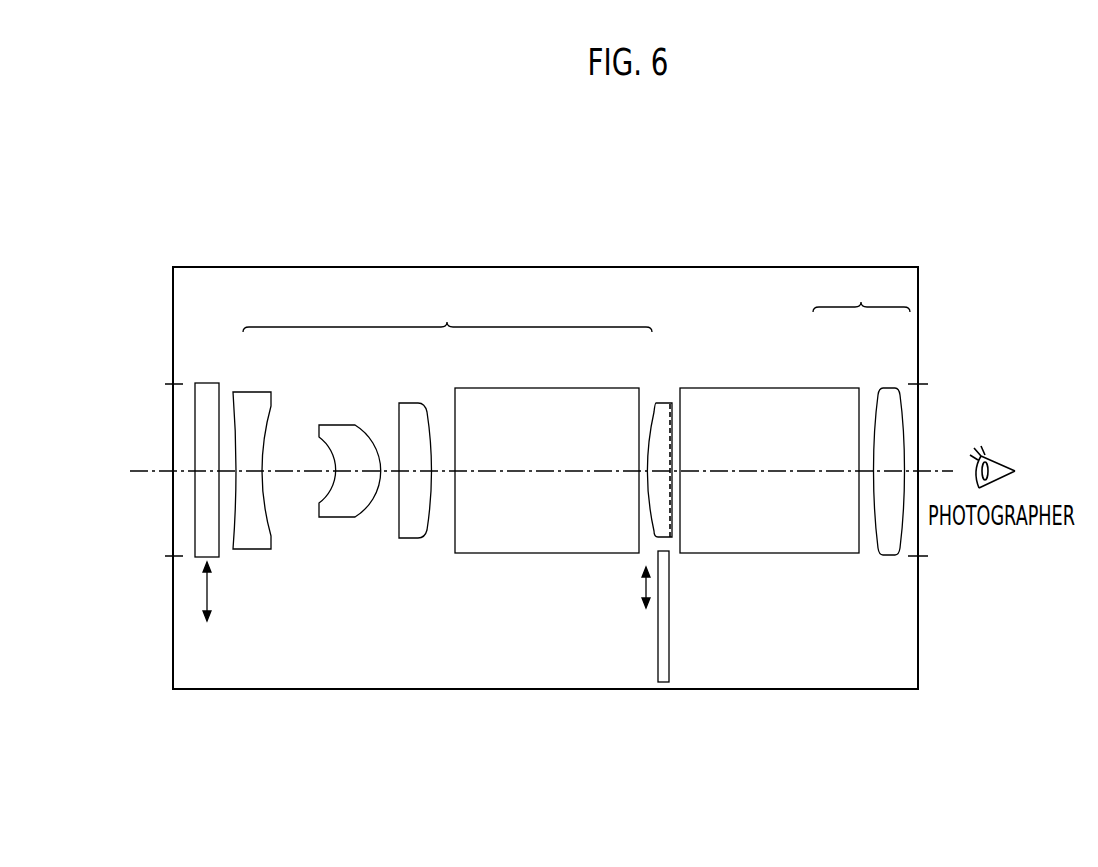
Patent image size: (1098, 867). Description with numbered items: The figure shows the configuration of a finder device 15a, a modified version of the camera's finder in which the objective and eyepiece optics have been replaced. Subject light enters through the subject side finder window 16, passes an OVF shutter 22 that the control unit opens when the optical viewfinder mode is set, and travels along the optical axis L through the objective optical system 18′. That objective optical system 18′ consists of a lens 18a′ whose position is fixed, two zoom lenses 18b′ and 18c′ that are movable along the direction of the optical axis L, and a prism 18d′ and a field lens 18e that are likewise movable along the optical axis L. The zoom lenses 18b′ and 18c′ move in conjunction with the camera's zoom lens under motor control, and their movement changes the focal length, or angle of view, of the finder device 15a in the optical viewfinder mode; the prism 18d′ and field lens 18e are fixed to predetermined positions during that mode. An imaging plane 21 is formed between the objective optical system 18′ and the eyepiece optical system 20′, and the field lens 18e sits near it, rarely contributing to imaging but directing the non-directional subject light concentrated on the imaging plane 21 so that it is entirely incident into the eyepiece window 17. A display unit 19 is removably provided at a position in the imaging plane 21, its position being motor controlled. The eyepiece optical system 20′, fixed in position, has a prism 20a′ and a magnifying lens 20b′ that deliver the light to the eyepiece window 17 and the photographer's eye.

The finder device 15a is at (675, 267).
The subject side finder window 16 is at (173, 546).
The eyepiece window 17 is at (918, 392).
The objective optical system 18′ is at (447, 313).
The lens 18a′ is at (251, 392).
The zoom lens 18b′ is at (333, 423).
The zoom lens 18c′ is at (409, 403).
The prism 18d′ is at (527, 396).
The field lens 18e is at (655, 410).
The display unit 19 is at (663, 682).
The eyepiece optical system 20′ is at (861, 292).
The prism 20a′ is at (834, 388).
The magnifying lens 20b′ is at (889, 388).
The imaging plane 21 is at (671, 404).
The OVF shutter 22 is at (205, 391).
The optical axis L is at (148, 469).